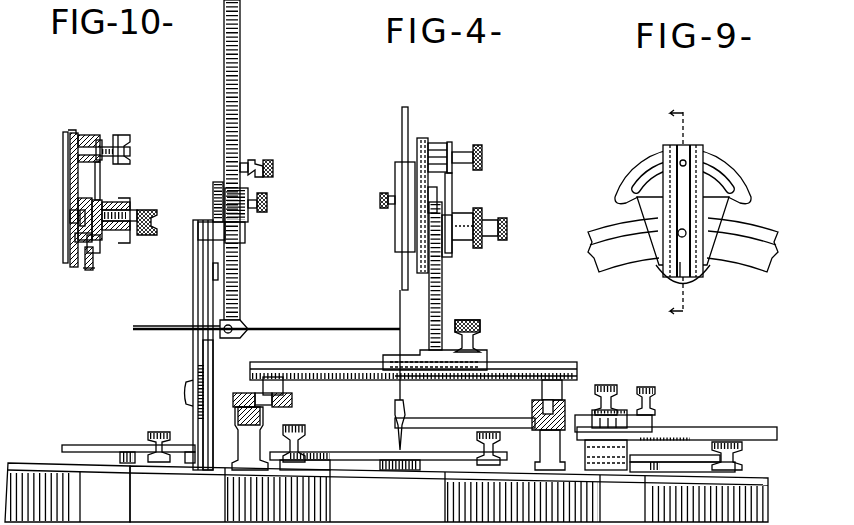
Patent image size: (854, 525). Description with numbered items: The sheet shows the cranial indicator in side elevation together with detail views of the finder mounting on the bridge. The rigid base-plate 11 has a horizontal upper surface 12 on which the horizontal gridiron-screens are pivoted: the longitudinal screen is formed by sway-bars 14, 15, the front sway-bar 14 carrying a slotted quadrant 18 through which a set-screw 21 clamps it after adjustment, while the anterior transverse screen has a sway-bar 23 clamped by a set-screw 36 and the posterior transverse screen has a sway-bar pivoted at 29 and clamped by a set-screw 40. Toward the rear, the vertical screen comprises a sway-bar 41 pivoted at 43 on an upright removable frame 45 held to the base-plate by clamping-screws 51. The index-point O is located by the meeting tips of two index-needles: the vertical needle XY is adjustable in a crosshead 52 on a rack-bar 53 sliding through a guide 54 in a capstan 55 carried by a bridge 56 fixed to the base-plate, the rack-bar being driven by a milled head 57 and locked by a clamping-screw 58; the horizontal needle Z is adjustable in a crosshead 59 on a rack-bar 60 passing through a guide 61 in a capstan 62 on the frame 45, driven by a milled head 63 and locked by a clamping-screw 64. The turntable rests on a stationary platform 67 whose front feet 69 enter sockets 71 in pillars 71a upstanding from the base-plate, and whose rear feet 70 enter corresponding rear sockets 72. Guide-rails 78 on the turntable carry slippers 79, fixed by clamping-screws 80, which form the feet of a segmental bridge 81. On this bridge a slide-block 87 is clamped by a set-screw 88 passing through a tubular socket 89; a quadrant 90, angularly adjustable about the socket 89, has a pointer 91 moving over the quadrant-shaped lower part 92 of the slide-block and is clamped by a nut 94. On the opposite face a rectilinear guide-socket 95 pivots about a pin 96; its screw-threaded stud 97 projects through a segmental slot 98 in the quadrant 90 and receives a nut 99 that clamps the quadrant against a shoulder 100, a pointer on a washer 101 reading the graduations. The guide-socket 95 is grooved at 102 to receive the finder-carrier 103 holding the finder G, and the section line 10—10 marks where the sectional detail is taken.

In FIG. 9, the section line 10 is at (690, 213).
In FIG. 4, the base-plate 11 is at (449, 494).
In FIG. 4, the horizontal upper surface 12 is at (32, 463).
In FIG. 4, the front sway-bar 14 is at (666, 462).
In FIG. 4, the sway-bar 15 is at (88, 445).
In FIG. 4, the slotted quadrant 18 is at (735, 467).
In FIG. 4, the set-screw 21 is at (742, 456).
In FIG. 4, the sway-bar 23 is at (344, 449).
In FIG. 4, the pivotal center 29 is at (428, 472).
In FIG. 4, the set-screw 36 is at (305, 428).
In FIG. 4, the set-screw 40 is at (477, 444).
In FIG. 4, the sway-bar 41 is at (213, 376).
In FIG. 4, the pivotal axis 43 is at (186, 390).
In FIG. 4, the upright removable frame 45 is at (193, 300).
In FIG. 4, the clamping-screws 51 is at (152, 432).
In FIG. 4, the crosshead 52 is at (404, 410).
In FIG. 4, the rack-bar 53 is at (727, 427).
In FIG. 4, the guide 54 is at (650, 418).
In FIG. 4, the capstan 55 is at (592, 414).
In FIG. 4, the bridge 56 is at (627, 452).
In FIG. 4, the milled head 57 is at (650, 388).
In FIG. 4, the clamping-screw 58 is at (608, 381).
In FIG. 4, the crosshead 59 is at (250, 316).
In FIG. 4, the rack-bar 60 is at (241, 87).
In FIG. 4, the guide 61 is at (245, 236).
In FIG. 4, the capstan 62 is at (213, 200).
In FIG. 4, the milled head 63 is at (275, 160).
In FIG. 4, the clamping-screw 64 is at (267, 204).
In FIG. 4, the platform 67 is at (492, 380).
In FIG. 4, the front feet 69 is at (553, 380).
In FIG. 4, the rear feet 70 is at (272, 377).
In FIG. 4, the front sockets 71 is at (532, 413).
In FIG. 4, the pillars 71a is at (540, 449).
In FIG. 4, the rear sockets 72 is at (278, 407).
In FIG. 4, the guide-rails 78 is at (352, 358).
In FIG. 4, the slippers 79 is at (487, 356).
In FIG. 4, the clamping-screws 80 is at (480, 322).
In FIG. 10, the bridge 81 is at (76, 238).
In FIG. 4, the bridge 81 is at (442, 297).
In FIG. 9, the bridge 81 is at (600, 259).
In FIG. 10, the slide-block 87 is at (98, 243).
In FIG. 4, the slide-block 87 is at (450, 252).
In FIG. 9, the slide-block 87 is at (712, 237).
In FIG. 10, the set-screw 88 is at (157, 221).
In FIG. 4, the set-screw 88 is at (507, 227).
In FIG. 10, the tubular socket 89 is at (112, 205).
In FIG. 10, the quadrant 90 is at (100, 178).
In FIG. 4, the quadrant 90 is at (452, 190).
In FIG. 9, the quadrant 90 is at (746, 176).
In FIG. 10, the pointer 91 is at (95, 258).
In FIG. 10, the lower part of slide-block 92 is at (89, 270).
In FIG. 9, the lower part of slide-block 92 is at (697, 283).
In FIG. 10, the nut 94 is at (132, 240).
In FIG. 4, the nut 94 is at (483, 243).
In FIG. 10, the guide-socket 95 is at (70, 130).
In FIG. 4, the guide-socket 95 is at (425, 140).
In FIG. 9, the guide-socket 95 is at (700, 178).
In FIG. 10, the pin 96 is at (72, 217).
In FIG. 9, the pin 96 is at (678, 234).
In FIG. 10, the screw-threaded stud 97 is at (130, 151).
In FIG. 9, the screw-threaded stud 97 is at (678, 163).
In FIG. 9, the segmental slot 98 is at (638, 181).
In FIG. 10, the nut 99 is at (124, 135).
In FIG. 4, the nut 99 is at (482, 154).
In FIG. 10, the shoulder 100 is at (88, 135).
In FIG. 4, the shoulder 100 is at (446, 143).
In FIG. 10, the washer 101 is at (102, 140).
In FIG. 10, the groove 102 is at (64, 178).
In FIG. 9, the groove 102 is at (679, 277).
In FIG. 4, the finder-carrier 103 is at (395, 186).
In FIG. 4, the finder G is at (402, 268).
In FIG. 4, the index-point O is at (411, 328).
In FIG. 4, the horizontal index-needle Z is at (283, 331).
In FIG. 4, the vertical index-needle XY is at (398, 396).